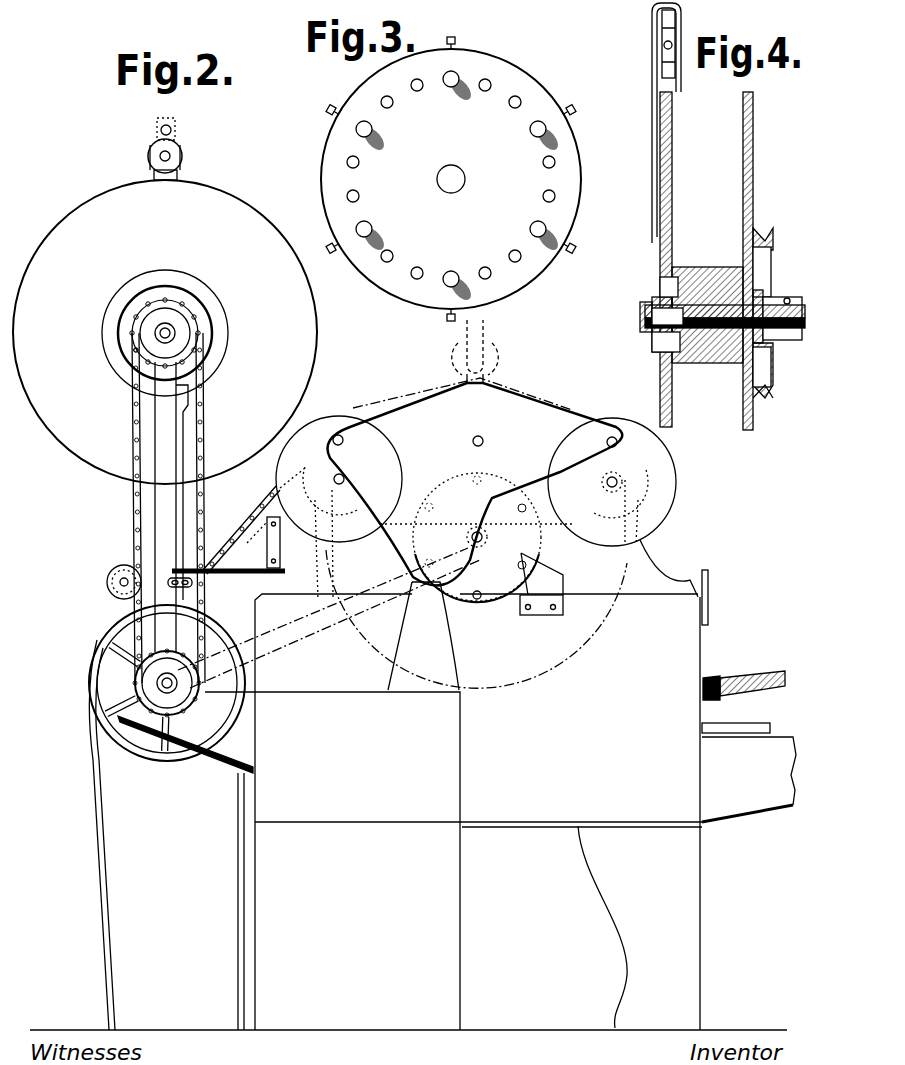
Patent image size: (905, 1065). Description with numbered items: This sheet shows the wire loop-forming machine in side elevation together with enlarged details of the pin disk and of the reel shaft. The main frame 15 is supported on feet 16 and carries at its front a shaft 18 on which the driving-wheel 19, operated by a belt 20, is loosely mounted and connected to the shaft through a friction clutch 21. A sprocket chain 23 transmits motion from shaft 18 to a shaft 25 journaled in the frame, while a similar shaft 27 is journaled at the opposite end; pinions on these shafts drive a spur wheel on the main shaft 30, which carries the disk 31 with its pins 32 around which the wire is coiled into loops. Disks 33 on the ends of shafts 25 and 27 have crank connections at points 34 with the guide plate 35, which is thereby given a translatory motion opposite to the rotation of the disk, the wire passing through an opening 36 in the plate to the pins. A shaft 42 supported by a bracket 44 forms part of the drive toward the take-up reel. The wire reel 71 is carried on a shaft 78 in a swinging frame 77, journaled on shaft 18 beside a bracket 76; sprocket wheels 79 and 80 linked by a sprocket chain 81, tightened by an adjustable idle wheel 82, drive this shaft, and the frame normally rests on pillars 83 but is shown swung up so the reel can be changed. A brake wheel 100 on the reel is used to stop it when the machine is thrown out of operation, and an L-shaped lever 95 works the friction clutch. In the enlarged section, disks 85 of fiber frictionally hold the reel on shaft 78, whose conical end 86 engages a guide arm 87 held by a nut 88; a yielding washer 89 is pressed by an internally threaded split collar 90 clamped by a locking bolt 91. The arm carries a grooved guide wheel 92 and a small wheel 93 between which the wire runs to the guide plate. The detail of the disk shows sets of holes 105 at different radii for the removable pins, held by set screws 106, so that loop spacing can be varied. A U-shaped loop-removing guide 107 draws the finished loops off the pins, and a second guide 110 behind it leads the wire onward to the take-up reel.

In FIG. 2, the main frame 15 is at (413, 785).
In FIG. 2, the feet 16 is at (623, 927).
In FIG. 2, the shaft 18 is at (160, 683).
In FIG. 2, the driving-wheel 19 is at (153, 752).
In FIG. 2, the belt 20 is at (99, 825).
In FIG. 2, the friction clutch 21 is at (126, 668).
In FIG. 2, the sprocket chain 23 is at (243, 535).
In FIG. 2, the shaft 25 is at (334, 480).
In FIG. 2, the shaft 27 is at (620, 483).
In FIG. 2, the main shaft 30 is at (484, 537).
In FIG. 2, the disk 31 is at (477, 537).
In FIG. 3, the disk 31 is at (451, 179).
In FIG. 2, the pins 32 is at (477, 600).
In FIG. 3, the pins 32 is at (370, 128).
In FIG. 2, the disks 33 is at (475, 533).
In FIG. 2, the crank connection points 34 is at (340, 436).
In FIG. 2, the guide plate 35 is at (475, 481).
In FIG. 2, the opening 36 is at (484, 440).
In FIG. 2, the shaft 42 is at (775, 680).
In FIG. 2, the bracket 44 is at (714, 680).
In FIG. 2, the wire reel 71 is at (165, 332).
In FIG. 4, the wire reel 71 is at (667, 165).
In FIG. 2, the bracket 76 is at (186, 692).
In FIG. 2, the swinging frame 77 is at (166, 513).
In FIG. 2, the shaft 78 is at (178, 333).
In FIG. 4, the shaft 78 is at (712, 305).
In FIG. 2, the sprocket wheel 79 is at (174, 702).
In FIG. 2, the sprocket wheel 80 is at (151, 339).
In FIG. 4, the sprocket wheel 80 is at (725, 316).
In FIG. 2, the sprocket chain 81 is at (134, 446).
In FIG. 2, the adjustable idle wheel 82 is at (106, 582).
In FIG. 2, the pillars 83 is at (402, 619).
In FIG. 4, the disks 85 is at (668, 295).
In FIG. 4, the conical end 86 is at (661, 325).
In FIG. 2, the guide arm 87 is at (150, 152).
In FIG. 4, the guide arm 87 is at (652, 200).
In FIG. 4, the nut 88 is at (641, 316).
In FIG. 4, the washer 89 is at (757, 300).
In FIG. 4, the split collar 90 is at (781, 336).
In FIG. 4, the locking bolt 91 is at (787, 298).
In FIG. 2, the grooved guide wheel 92 is at (182, 158).
In FIG. 4, the grooved guide wheel 92 is at (673, 63).
In FIG. 2, the small wheel 93 is at (158, 127).
In FIG. 4, the small wheel 93 is at (666, 34).
In FIG. 2, the L-shaped lever 95 is at (228, 544).
In FIG. 2, the brake wheel 100 is at (165, 280).
In FIG. 4, the brake wheel 100 is at (763, 398).
In FIG. 3, the sets of holes 105 is at (359, 198).
In FIG. 3, the set screws 106 is at (336, 254).
In FIG. 2, the loop-removing guide 107 is at (548, 574).
In FIG. 2, the second guide 110 is at (731, 594).